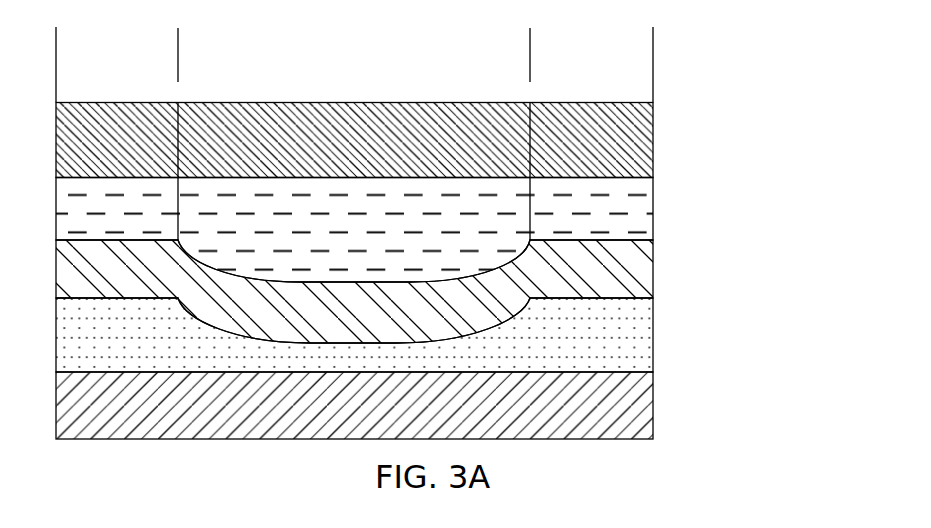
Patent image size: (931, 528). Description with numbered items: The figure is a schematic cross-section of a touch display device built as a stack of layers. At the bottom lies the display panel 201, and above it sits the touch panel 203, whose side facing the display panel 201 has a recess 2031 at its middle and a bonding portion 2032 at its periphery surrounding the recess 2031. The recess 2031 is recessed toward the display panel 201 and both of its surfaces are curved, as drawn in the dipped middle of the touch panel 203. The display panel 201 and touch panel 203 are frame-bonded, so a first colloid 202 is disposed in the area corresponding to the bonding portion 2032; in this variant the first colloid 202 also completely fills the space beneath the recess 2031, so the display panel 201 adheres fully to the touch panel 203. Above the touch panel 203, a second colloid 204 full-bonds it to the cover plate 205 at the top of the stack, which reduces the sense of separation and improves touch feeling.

The display panel 201 is at (632, 417).
The first colloid 202 is at (625, 352).
The touch panel 203 is at (628, 277).
The second colloid 204 is at (613, 215).
The cover plate 205 is at (625, 150).
The recess 2031 is at (178, 50).
The bonding portion 2032 is at (653, 50).